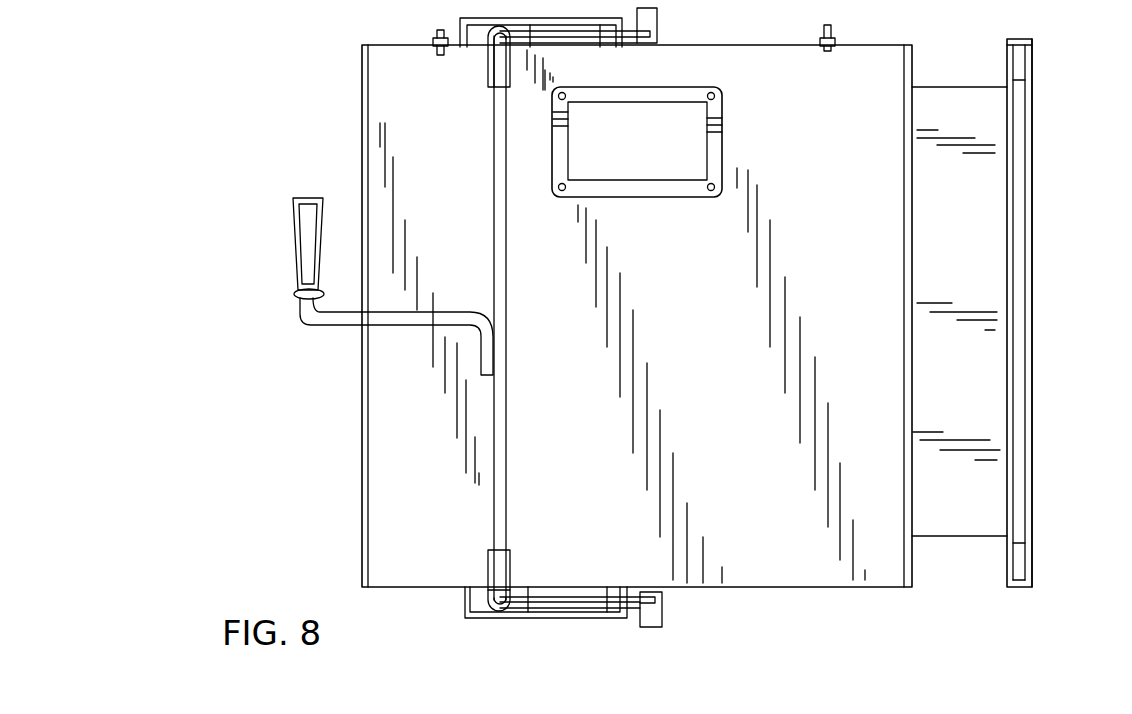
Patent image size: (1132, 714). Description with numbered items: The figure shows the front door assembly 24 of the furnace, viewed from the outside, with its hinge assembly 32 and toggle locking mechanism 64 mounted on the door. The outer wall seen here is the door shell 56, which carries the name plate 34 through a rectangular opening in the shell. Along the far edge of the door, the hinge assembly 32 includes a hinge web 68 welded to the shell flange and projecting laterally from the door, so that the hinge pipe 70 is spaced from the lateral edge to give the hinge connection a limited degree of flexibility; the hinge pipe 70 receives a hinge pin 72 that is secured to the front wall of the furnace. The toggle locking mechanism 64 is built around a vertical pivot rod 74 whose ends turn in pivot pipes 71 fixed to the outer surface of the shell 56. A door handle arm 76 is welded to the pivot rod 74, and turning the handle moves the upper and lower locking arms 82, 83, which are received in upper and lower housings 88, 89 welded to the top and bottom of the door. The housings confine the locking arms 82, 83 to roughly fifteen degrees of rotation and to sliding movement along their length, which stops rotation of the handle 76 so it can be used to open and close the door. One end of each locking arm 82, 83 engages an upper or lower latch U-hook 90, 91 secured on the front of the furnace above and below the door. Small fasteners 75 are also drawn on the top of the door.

The front door assembly 24 is at (935, 52).
The hinge assembly 32 is at (1033, 38).
The name plate 34 is at (720, 137).
The door shell 56 is at (395, 495).
The toggle locking mechanism 64 is at (295, 306).
The hinge web 68 is at (990, 537).
The hinge pipe 70 is at (1034, 190).
The pivot pipes 71 is at (488, 72).
The hinge pin 72 is at (1032, 65).
The pivot rod 74 is at (493, 190).
The screw 75 is at (432, 38).
The door handle arm 76 is at (335, 327).
The upper locking arm 82 is at (557, 33).
The lower locking arm 83 is at (590, 605).
The upper housing 88 is at (490, 18).
The lower housing 89 is at (485, 620).
The upper latch U-hook 90 is at (657, 18).
The lower latch U-hook 91 is at (660, 617).